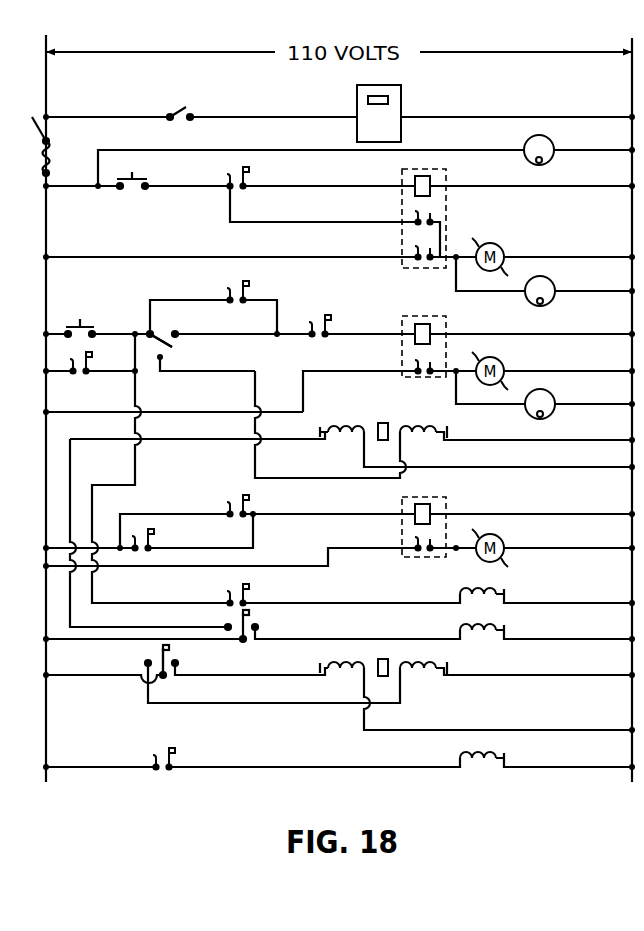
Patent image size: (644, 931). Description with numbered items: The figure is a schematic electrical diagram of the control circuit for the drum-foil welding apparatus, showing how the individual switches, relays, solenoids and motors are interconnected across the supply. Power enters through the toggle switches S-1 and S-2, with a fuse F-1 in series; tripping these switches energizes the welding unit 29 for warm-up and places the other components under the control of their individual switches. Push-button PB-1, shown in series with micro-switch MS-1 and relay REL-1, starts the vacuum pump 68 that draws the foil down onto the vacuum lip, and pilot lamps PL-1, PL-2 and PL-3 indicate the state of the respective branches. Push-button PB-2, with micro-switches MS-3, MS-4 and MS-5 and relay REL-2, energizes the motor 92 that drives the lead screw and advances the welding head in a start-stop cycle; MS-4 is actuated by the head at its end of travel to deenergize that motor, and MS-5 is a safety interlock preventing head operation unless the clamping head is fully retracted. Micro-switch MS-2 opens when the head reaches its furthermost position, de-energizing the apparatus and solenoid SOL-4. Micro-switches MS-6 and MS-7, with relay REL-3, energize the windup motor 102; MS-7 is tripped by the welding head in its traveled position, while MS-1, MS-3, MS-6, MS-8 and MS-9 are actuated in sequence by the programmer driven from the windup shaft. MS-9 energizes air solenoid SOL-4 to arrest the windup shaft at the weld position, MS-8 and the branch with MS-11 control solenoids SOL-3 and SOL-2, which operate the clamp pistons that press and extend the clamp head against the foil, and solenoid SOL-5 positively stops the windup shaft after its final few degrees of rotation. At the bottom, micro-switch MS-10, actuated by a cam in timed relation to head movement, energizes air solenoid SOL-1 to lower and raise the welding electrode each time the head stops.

The welding unit 29 is at (465, 88).
The vacuum pump 68 is at (499, 246).
The motor 92 is at (499, 360).
The motor 102 is at (499, 537).
The toggle switch S-1 is at (180, 101).
The toggle switch S-2 is at (62, 130).
The fuse F-1 is at (65, 158).
The push-button PB-1 is at (157, 176).
The push-button PB-2 is at (102, 319).
The micro-switch MS-1 is at (266, 176).
The micro-switch MS-2 is at (90, 374).
The micro-switch MS-3 is at (267, 289).
The micro-switch MS-4 is at (191, 346).
The micro-switch MS-5 is at (348, 323).
The micro-switch MS-6 is at (267, 502).
The micro-switch MS-7 is at (175, 537).
The micro-switch MS-8 is at (271, 592).
The micro-switch MS-9 is at (274, 626).
The micro-switch MS-10 is at (201, 755).
The microswitch MS-11 is at (197, 661).
The pilot lamp PL-1 is at (559, 144).
The pilot lamp PL-2 is at (565, 285).
The pilot lamp PL-3 is at (565, 398).
The relay REL-1 is at (456, 214).
The relay REL-2 is at (459, 343).
The relay REL-3 is at (461, 521).
The air solenoid SOL-1 is at (520, 751).
The air solenoid SOL-2 is at (520, 625).
The air solenoid SOL-3 is at (520, 588).
The air solenoid SOL-4 is at (382, 418).
The solenoid SOL-5 is at (399, 679).